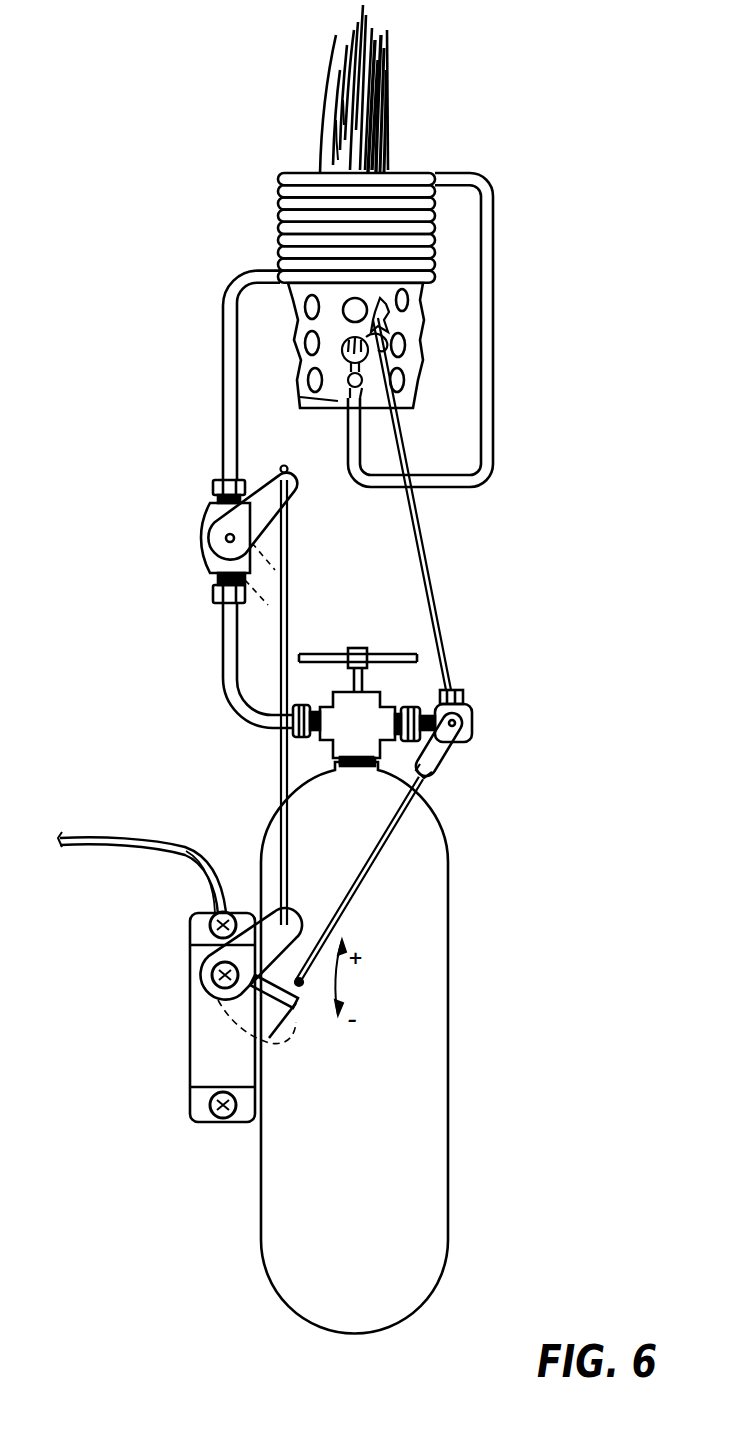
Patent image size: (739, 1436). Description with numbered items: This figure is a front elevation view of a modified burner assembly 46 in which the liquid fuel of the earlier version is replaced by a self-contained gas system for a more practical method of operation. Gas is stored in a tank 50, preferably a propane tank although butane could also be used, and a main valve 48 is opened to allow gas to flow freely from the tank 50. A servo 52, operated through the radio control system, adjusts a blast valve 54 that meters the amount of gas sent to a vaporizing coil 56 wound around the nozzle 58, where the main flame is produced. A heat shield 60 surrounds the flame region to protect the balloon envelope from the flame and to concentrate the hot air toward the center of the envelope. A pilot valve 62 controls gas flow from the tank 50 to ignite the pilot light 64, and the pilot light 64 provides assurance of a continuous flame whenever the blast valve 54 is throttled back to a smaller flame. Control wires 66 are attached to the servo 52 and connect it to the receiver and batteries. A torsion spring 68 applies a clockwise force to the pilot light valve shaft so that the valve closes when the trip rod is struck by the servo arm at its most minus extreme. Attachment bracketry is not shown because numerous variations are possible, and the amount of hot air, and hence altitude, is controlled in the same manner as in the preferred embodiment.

The burner assembly 46 is at (542, 477).
The main valve 48 is at (382, 692).
The tank 50 is at (407, 1133).
The servo 52 is at (191, 1017).
The blast valve 54 is at (192, 536).
The vaporizing coil 56 is at (277, 190).
The nozzle 58 is at (300, 400).
The heat shield 60 is at (288, 328).
The pilot valve 62 is at (470, 712).
The pilot light 64 is at (388, 316).
The control wires 66 is at (112, 838).
The torsion spring 68 is at (472, 742).